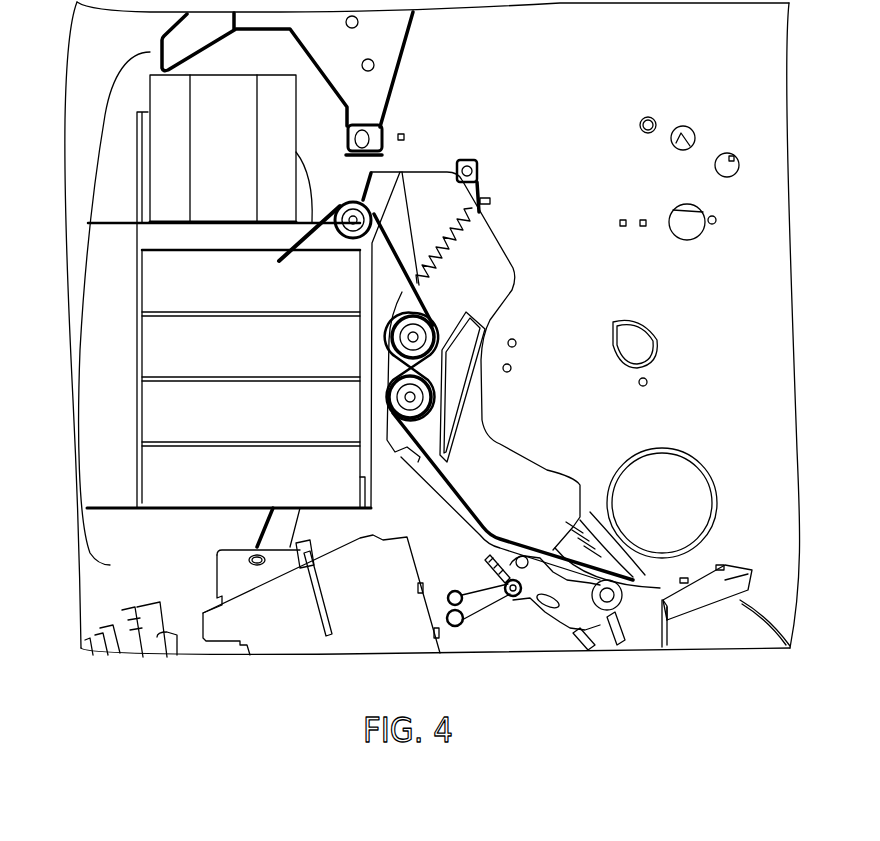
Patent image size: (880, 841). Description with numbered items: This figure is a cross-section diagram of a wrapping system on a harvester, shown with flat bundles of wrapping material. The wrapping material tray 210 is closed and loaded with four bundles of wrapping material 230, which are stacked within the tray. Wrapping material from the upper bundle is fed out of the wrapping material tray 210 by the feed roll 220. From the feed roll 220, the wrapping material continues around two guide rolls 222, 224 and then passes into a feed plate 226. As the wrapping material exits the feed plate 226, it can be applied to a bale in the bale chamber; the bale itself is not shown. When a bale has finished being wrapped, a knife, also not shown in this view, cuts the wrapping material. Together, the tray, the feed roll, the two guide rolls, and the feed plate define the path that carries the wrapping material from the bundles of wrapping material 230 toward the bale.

The wrapping material tray 210 is at (103, 268).
The feed roll 220 is at (358, 216).
The guide roll 222 is at (418, 334).
The guide roll 224 is at (418, 395).
The feed plate 226 is at (450, 467).
The bundles of wrapping material 230 is at (208, 363).